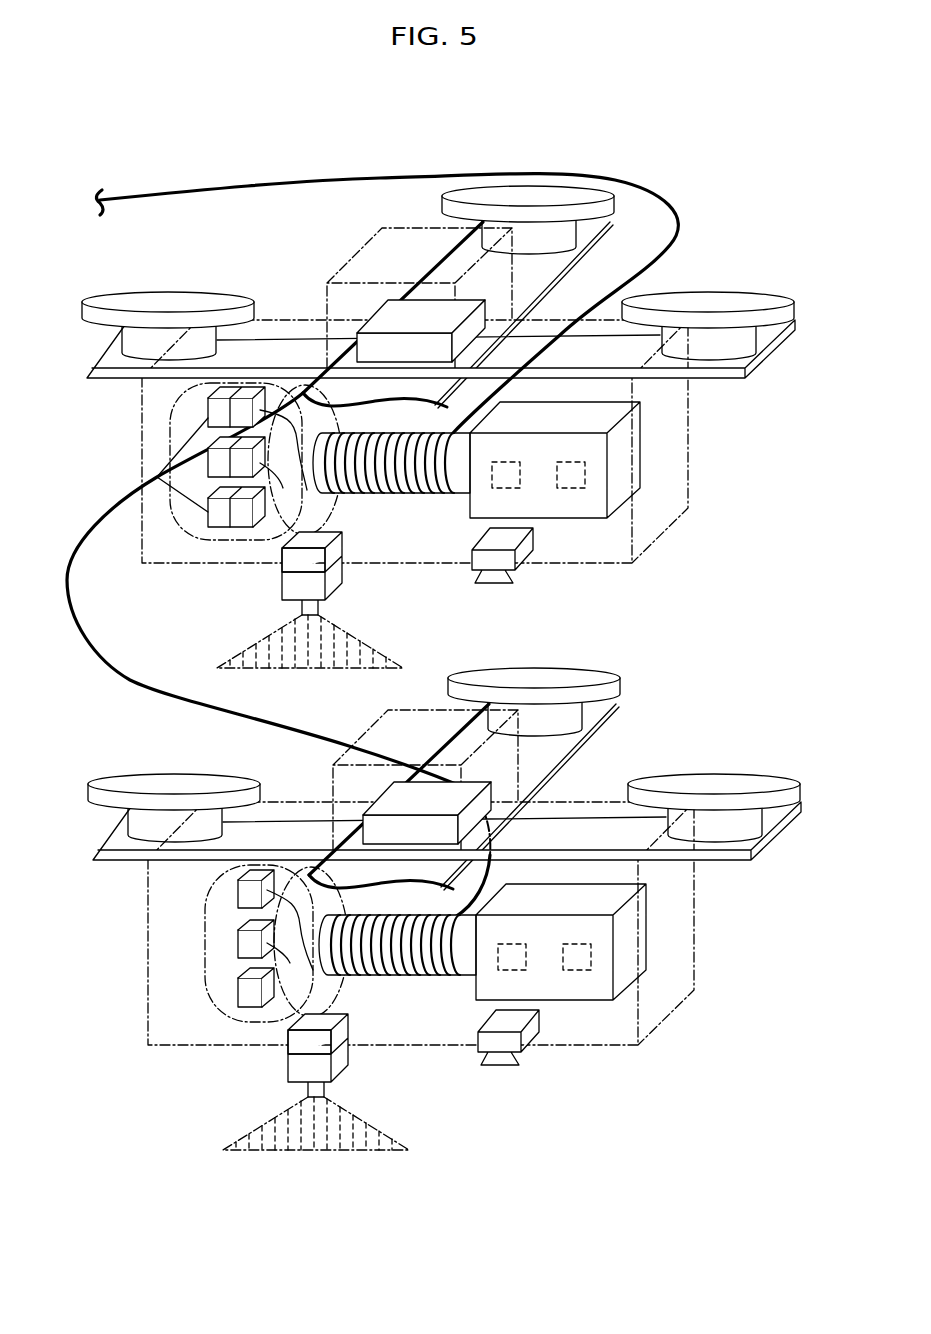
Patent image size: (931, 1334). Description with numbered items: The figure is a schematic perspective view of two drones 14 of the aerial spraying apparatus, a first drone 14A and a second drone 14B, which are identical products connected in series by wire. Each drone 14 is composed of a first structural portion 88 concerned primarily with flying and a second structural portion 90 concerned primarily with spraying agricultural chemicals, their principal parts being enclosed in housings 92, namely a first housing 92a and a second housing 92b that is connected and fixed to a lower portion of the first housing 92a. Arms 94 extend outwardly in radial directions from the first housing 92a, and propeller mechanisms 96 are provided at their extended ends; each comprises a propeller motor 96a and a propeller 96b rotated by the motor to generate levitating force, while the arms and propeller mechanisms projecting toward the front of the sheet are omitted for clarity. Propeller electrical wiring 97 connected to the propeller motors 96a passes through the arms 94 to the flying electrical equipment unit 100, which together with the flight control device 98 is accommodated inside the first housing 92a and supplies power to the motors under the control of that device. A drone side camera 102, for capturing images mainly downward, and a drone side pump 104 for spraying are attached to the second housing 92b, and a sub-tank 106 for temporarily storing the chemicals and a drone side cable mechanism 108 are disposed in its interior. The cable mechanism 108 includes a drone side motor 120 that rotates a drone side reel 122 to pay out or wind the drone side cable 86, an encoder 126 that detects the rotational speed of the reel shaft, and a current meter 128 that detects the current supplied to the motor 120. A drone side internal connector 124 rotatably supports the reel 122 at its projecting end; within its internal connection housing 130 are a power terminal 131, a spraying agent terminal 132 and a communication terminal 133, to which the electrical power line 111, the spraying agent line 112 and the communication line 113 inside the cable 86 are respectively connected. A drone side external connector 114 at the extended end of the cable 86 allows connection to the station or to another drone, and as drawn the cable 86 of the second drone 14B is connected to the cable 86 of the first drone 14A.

The drone 14 is at (747, 428).
The first drone 14A is at (688, 217).
The second drone 14B is at (697, 697).
The drone side cable 86 is at (243, 183).
The first structural portion 88 is at (373, 229).
The second structural portion 90 is at (457, 682).
The housing 92 is at (444, 540).
The first housing 92a is at (340, 758).
The second housing 92b is at (690, 480).
The arm 94 is at (572, 262).
The propeller mechanism 96 is at (441, 479).
The propeller motor 96a is at (143, 338).
The propeller 96b is at (132, 245).
The propeller electrical wiring 97 is at (567, 340).
The flight control device 98 is at (408, 474).
The flying electrical equipment unit 100 is at (435, 797).
The drone side camera 102 is at (522, 550).
The drone side pump 104 is at (319, 841).
The sub-tank 106 is at (335, 545).
The drone side cable mechanism 108 is at (615, 748).
The electrical power line 111 is at (322, 418).
The spraying agent line 112 is at (310, 493).
The communication line 113 is at (300, 517).
The drone side external connector 114 is at (170, 423).
The drone side motor 120 is at (615, 701).
The drone side reel 122 is at (458, 475).
The drone side internal connector 124 is at (250, 837).
The encoder 126 is at (503, 462).
The current meter 128 is at (567, 462).
The internal connection housing 130 is at (238, 1087).
The power terminal 131 is at (248, 390).
The spraying agent terminal 132 is at (207, 457).
The communication terminal 133 is at (243, 517).